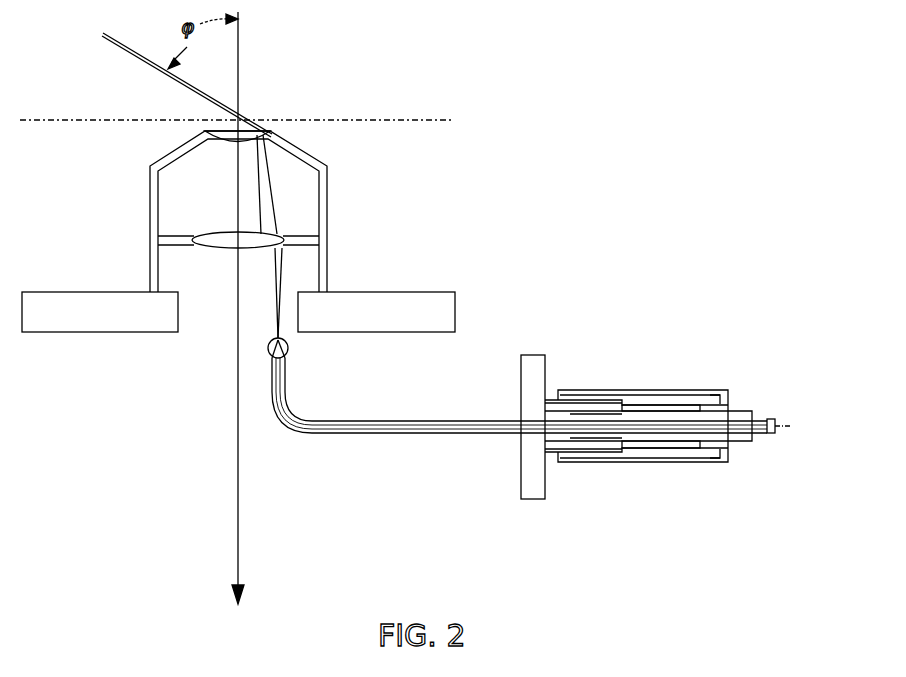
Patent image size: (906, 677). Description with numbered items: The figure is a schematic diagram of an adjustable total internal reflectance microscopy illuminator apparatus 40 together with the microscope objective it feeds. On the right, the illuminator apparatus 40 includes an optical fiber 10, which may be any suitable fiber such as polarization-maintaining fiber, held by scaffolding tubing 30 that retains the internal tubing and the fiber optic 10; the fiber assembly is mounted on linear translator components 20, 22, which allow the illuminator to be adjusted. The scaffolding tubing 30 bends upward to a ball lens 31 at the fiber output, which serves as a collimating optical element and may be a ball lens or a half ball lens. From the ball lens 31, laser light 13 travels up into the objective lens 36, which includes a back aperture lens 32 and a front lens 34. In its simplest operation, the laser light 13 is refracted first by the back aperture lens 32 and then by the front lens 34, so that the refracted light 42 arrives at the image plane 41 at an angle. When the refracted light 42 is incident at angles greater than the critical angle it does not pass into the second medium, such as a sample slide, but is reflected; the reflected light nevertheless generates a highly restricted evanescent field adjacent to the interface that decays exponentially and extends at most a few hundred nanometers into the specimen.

The optical fiber 10 is at (778, 418).
The laser light 13 is at (267, 205).
The linear translator component 20 is at (640, 390).
The linear translator component 22 is at (553, 400).
The scaffolding tubing 30 is at (352, 420).
The ball lens 31 is at (289, 350).
The back aperture lens 32 is at (205, 232).
The front lens 34 is at (224, 142).
The objective lens 36 is at (345, 170).
The adjustable total internal reflectance microscopy (TIRFM) illuminator apparatus 40 is at (592, 530).
The image plane 41 is at (348, 119).
The refracted light 42 is at (130, 57).